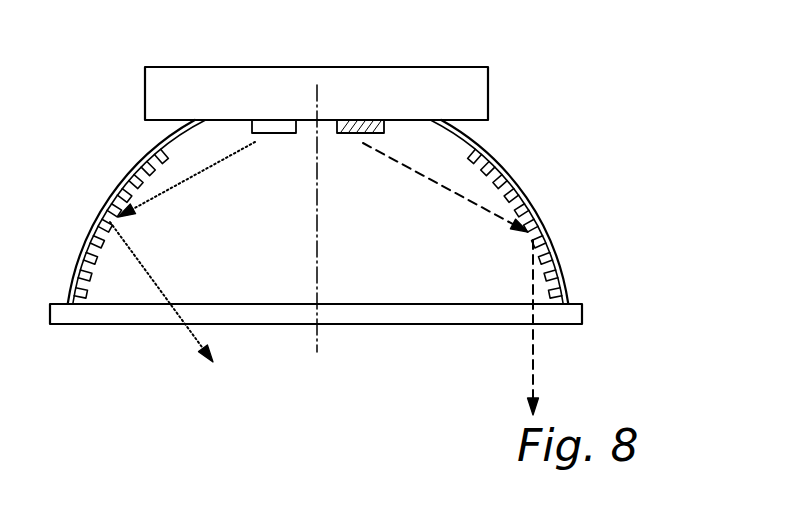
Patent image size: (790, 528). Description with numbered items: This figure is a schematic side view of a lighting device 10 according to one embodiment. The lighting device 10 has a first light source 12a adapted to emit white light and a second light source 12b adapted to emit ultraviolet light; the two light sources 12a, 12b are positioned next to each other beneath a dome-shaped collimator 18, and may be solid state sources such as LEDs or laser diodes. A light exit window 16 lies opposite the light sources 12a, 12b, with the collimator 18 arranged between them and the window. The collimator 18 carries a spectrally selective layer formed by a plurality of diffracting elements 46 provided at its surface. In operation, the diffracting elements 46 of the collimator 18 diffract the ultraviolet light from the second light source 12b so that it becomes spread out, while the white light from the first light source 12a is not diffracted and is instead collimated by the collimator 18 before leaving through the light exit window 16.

The lighting device 10 is at (625, 98).
The first light source 12a is at (385, 128).
The second light source 12b is at (252, 128).
The light exit window 16 is at (583, 315).
The collimator 18 is at (575, 262).
The diffracting elements 46 is at (605, 172).